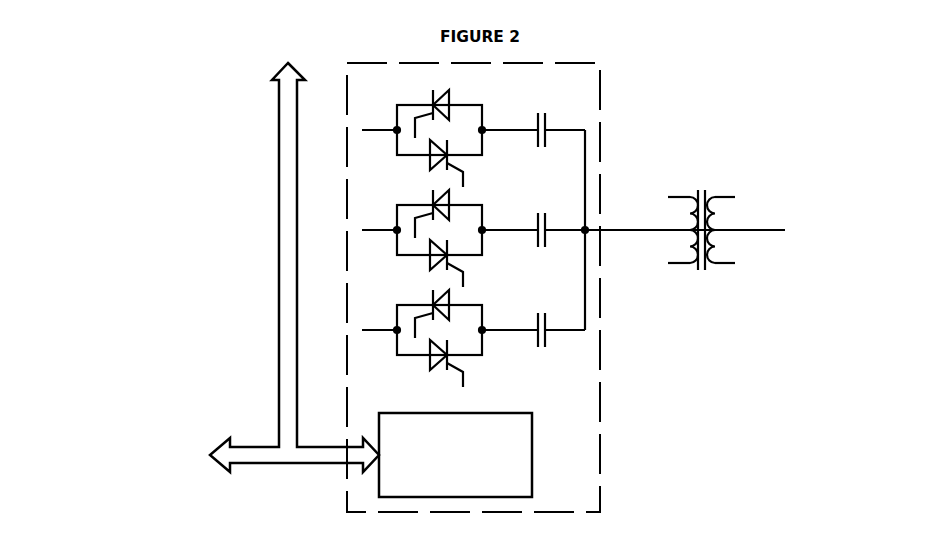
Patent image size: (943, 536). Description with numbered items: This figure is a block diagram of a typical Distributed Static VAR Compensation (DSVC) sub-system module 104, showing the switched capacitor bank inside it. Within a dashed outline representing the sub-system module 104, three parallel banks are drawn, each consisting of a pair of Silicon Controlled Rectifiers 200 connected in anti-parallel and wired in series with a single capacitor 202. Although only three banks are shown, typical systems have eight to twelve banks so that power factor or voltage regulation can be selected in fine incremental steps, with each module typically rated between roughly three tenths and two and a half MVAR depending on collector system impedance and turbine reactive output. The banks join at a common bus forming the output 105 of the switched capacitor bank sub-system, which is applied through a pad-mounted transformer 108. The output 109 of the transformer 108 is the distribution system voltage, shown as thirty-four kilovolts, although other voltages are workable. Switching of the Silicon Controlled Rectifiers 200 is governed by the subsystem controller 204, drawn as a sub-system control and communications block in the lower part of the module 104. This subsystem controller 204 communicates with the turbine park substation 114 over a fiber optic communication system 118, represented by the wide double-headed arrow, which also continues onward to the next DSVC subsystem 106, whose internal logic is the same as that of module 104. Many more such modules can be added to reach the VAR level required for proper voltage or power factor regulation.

The DSVC sub-system module 104 is at (473, 287).
The Silicon Controlled Rectifiers 200 is at (425, 163).
The capacitor 202 is at (543, 155).
The subsystem controller 204 is at (455, 455).
The output of the switched capacitor bank sub-system 105 is at (643, 238).
The pad-mounted transformer 108 is at (702, 188).
The output of transformer 109 is at (769, 238).
The fiber optic communication system 118 is at (272, 238).
The next DSVC sub-system module 106 is at (274, 46).
The turbine park substation 114 is at (126, 454).